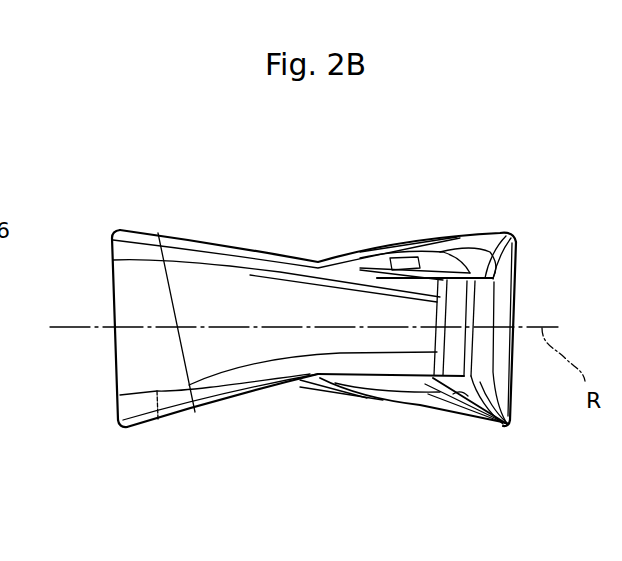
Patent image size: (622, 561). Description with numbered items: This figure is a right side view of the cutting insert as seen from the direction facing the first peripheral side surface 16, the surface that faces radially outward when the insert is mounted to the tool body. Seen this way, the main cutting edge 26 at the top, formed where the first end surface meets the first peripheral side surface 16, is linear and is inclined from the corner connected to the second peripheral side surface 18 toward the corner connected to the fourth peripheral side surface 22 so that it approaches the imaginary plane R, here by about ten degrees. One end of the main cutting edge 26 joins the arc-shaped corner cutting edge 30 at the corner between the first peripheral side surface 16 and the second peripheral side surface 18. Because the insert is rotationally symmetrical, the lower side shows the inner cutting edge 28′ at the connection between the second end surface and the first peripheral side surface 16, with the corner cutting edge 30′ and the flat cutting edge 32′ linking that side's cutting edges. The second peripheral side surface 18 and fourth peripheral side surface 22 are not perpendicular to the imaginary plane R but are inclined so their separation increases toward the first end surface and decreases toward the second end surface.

The first peripheral side surface 16 is at (293, 303).
The second peripheral side surface 18 is at (108, 353).
The fourth peripheral side surface 22 is at (520, 285).
The main cutting edge 26 is at (248, 248).
The inner cutting edge 28′ is at (390, 381).
The corner cutting edge 30 is at (135, 231).
The corner cutting edge 30′ is at (138, 428).
The flat cutting edge 32′ is at (177, 414).